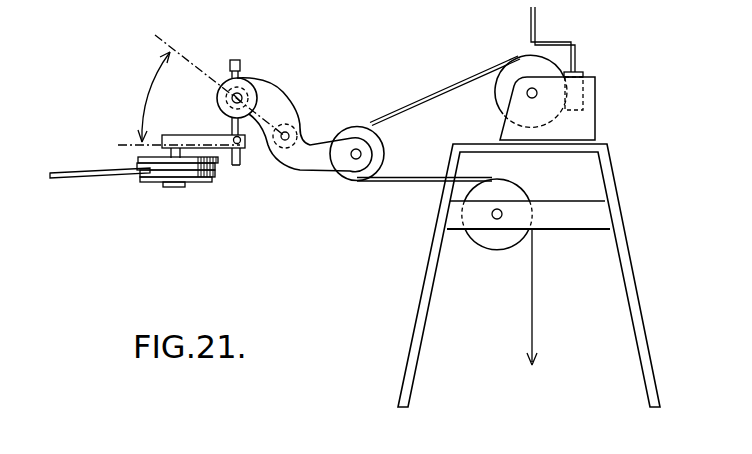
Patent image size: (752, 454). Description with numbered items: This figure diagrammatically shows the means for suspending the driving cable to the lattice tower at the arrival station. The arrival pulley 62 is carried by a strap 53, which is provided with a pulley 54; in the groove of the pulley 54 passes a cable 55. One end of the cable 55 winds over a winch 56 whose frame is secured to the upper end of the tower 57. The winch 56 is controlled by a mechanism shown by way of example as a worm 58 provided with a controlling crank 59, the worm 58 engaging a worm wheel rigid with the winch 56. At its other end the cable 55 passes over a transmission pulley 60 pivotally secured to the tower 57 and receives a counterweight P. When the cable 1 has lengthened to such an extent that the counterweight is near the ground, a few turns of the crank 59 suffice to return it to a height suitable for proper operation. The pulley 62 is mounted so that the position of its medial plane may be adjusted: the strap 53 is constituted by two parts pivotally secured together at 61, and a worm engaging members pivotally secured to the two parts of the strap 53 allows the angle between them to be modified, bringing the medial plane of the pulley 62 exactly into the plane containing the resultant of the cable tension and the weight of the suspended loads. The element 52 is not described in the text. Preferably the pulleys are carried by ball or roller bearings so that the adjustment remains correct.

The cable 1 is at (85, 177).
The clamp plate stack 52 is at (157, 181).
The strap 53 is at (281, 115).
The pulley 54 is at (352, 181).
The cable 55 is at (428, 96).
The winch 56 is at (498, 95).
The tower 57 is at (636, 283).
The worm 58 is at (586, 102).
The controlling crank 59 is at (551, 43).
The transmission pulley 60 is at (496, 248).
The pivot of the strap parts 61 is at (282, 141).
The arrival pulley 62 is at (241, 68).